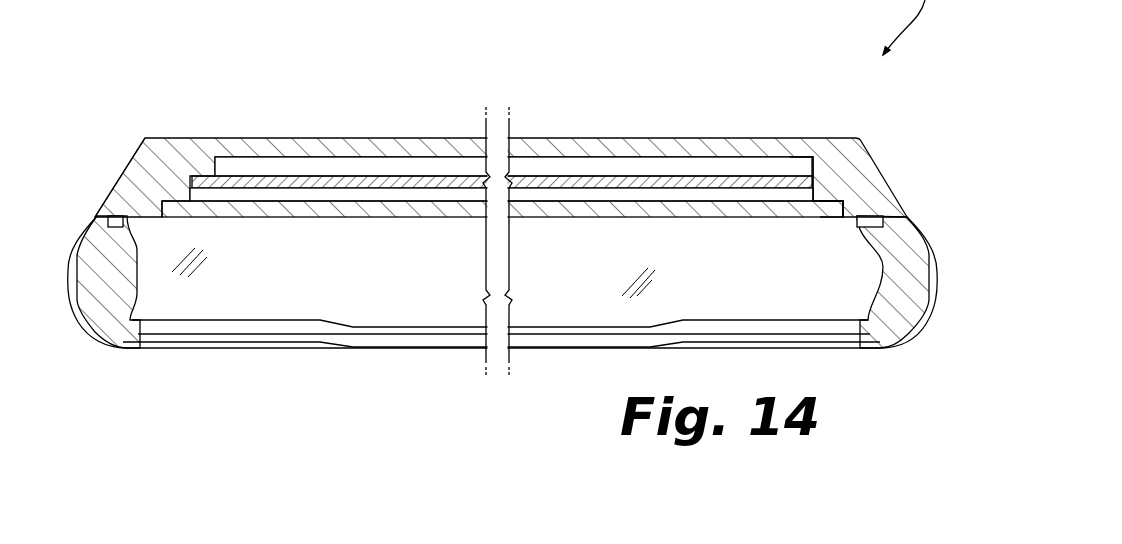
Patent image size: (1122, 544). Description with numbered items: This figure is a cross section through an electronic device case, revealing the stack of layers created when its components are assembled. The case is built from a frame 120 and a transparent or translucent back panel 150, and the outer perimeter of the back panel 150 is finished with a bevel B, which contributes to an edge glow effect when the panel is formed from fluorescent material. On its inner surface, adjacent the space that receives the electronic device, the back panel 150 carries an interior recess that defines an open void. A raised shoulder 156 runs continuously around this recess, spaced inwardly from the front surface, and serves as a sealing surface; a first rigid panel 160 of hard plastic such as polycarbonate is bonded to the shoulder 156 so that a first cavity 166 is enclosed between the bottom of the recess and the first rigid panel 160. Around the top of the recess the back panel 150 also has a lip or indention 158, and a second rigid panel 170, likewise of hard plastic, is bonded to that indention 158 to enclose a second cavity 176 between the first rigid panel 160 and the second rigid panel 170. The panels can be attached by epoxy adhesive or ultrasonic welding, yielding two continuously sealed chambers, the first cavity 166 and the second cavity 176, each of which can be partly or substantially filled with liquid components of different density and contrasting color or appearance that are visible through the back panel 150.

The frame 120 is at (903, 310).
The back panel 150 is at (567, 138).
The shoulder 156 is at (795, 174).
The indention 158 is at (828, 208).
The first rigid panel 160 is at (672, 178).
The first cavity 166 is at (418, 160).
The second rigid panel 170 is at (280, 207).
The second cavity 176 is at (383, 197).
The bevel B is at (127, 170).